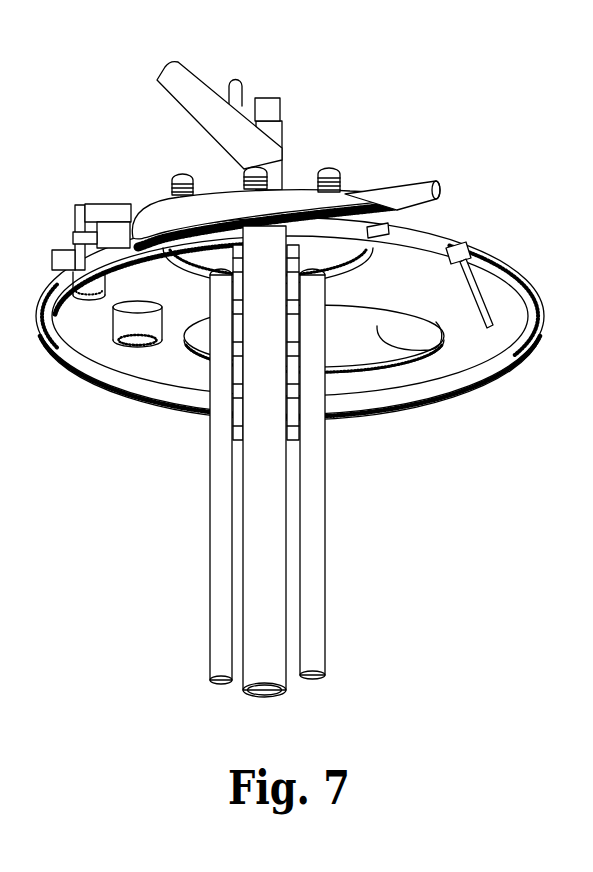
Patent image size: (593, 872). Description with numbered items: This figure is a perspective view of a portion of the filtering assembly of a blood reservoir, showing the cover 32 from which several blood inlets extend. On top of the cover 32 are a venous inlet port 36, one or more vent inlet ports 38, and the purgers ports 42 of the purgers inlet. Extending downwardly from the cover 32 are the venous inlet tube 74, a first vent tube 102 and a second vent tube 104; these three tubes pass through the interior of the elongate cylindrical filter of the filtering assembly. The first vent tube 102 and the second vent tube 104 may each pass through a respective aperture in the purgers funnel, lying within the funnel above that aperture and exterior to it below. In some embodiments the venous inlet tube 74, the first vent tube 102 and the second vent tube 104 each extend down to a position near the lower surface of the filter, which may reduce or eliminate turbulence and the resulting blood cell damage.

The cover 32 is at (503, 268).
The venous inlet port 36 is at (162, 68).
The vent inlet port 38 is at (107, 205).
The purgers port 42 is at (178, 178).
The venous inlet tube 74 is at (268, 500).
The first vent tube 102 is at (225, 552).
The second vent tube 104 is at (313, 558).